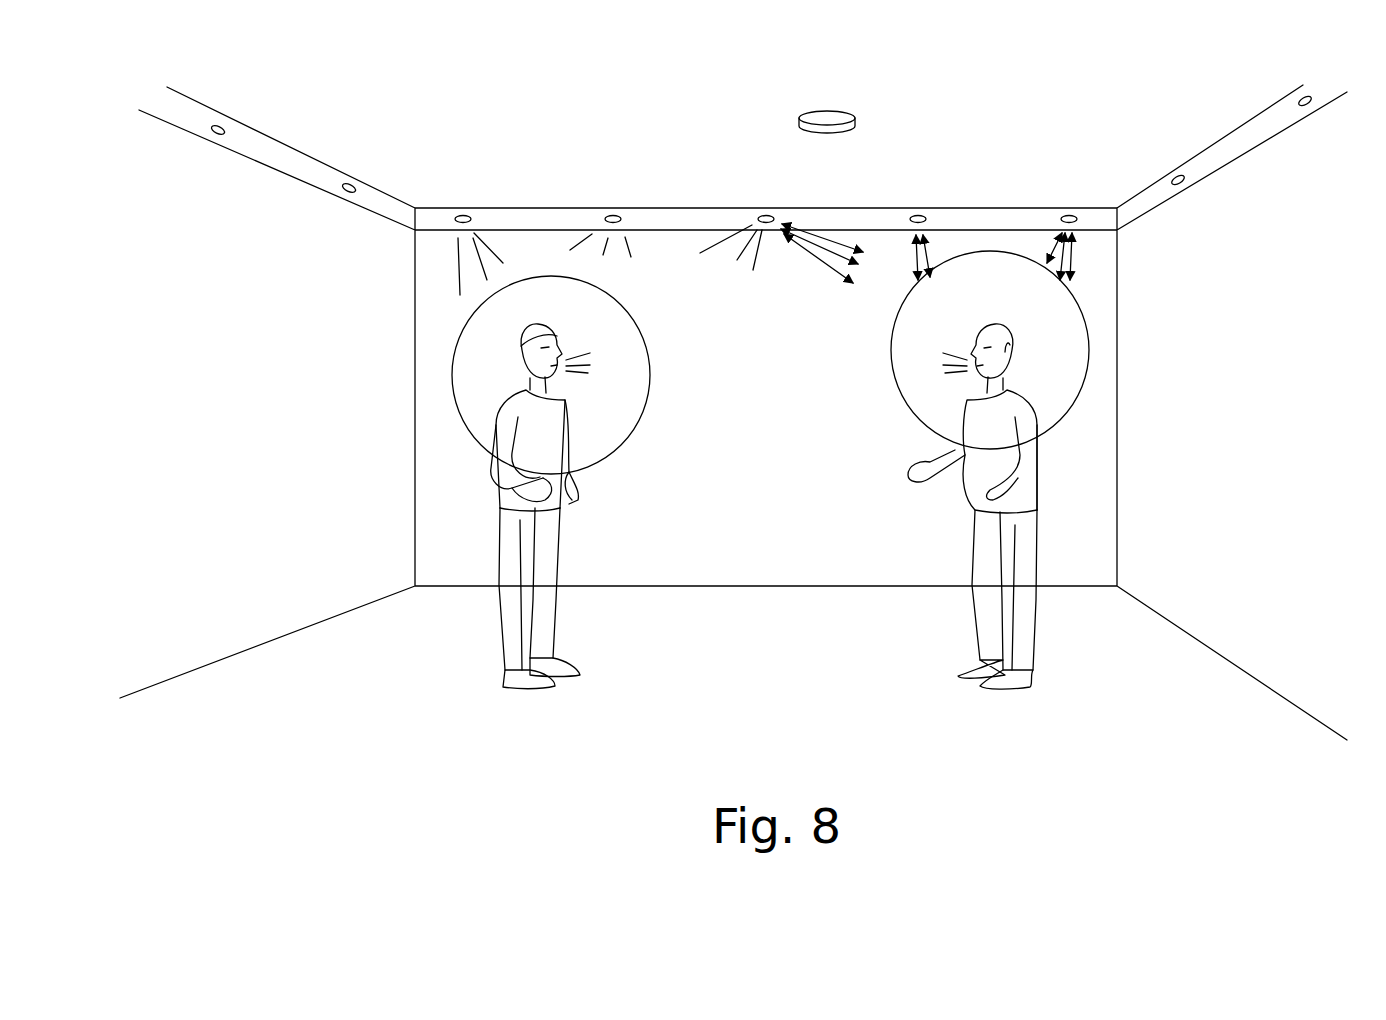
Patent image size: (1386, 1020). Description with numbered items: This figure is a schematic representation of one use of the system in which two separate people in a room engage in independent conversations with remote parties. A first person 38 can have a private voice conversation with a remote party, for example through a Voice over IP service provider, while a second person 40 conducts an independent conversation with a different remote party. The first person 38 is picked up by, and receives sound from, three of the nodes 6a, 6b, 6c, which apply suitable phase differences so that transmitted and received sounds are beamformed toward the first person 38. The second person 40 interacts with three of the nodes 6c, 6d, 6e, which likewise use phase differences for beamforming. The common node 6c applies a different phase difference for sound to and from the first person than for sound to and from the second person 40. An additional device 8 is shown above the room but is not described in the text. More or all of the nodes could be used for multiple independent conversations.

The ceiling device 8 is at (826, 128).
The node 6a is at (465, 213).
The node 6b is at (616, 213).
The node 6c is at (764, 213).
The node 6d is at (920, 213).
The node 6e is at (1071, 213).
The first person 38 is at (558, 500).
The second person 40 is at (978, 490).